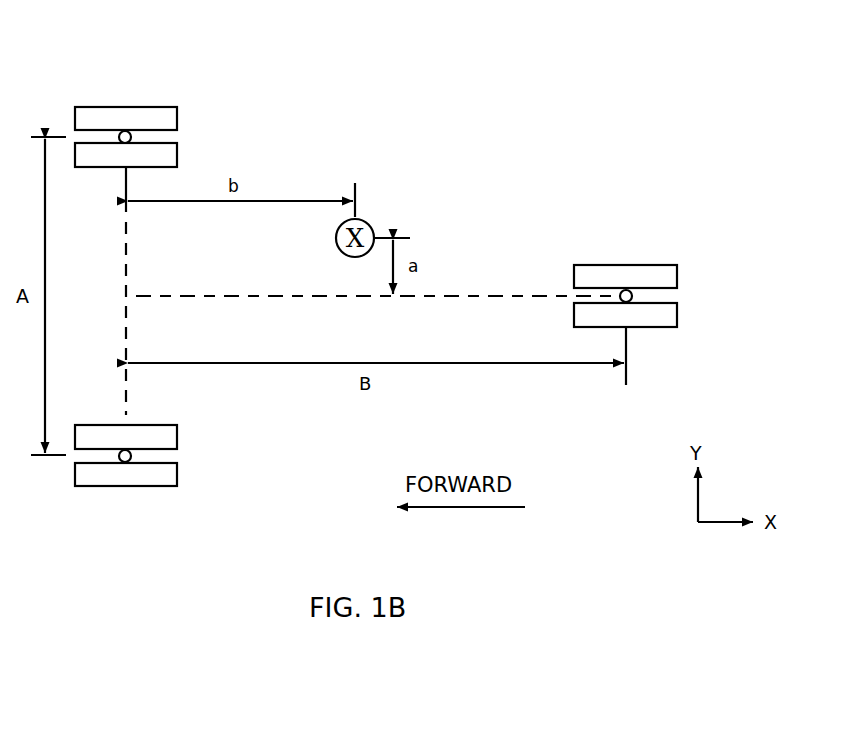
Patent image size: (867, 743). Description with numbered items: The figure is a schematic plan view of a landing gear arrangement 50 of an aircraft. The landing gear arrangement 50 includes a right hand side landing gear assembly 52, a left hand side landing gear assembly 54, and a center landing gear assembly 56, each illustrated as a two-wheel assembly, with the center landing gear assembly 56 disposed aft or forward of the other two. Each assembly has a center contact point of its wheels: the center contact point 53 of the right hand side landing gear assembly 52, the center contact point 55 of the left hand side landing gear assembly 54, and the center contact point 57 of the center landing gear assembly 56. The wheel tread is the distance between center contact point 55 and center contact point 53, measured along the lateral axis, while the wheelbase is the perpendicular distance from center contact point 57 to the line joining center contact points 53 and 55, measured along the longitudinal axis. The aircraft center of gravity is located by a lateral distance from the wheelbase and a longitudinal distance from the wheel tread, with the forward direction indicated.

The landing gear arrangement 50 is at (557, 86).
The right hand side (RHS) landing gear assembly 52 is at (145, 114).
The center contact point of RHS landing gear assembly 53 is at (132, 137).
The left hand side (LHS) landing gear assembly 54 is at (178, 479).
The center contact point of LHS landing gear assembly 55 is at (132, 457).
The center landing gear assembly 56 is at (656, 327).
The center contact point of center landing gear assembly 57 is at (633, 296).